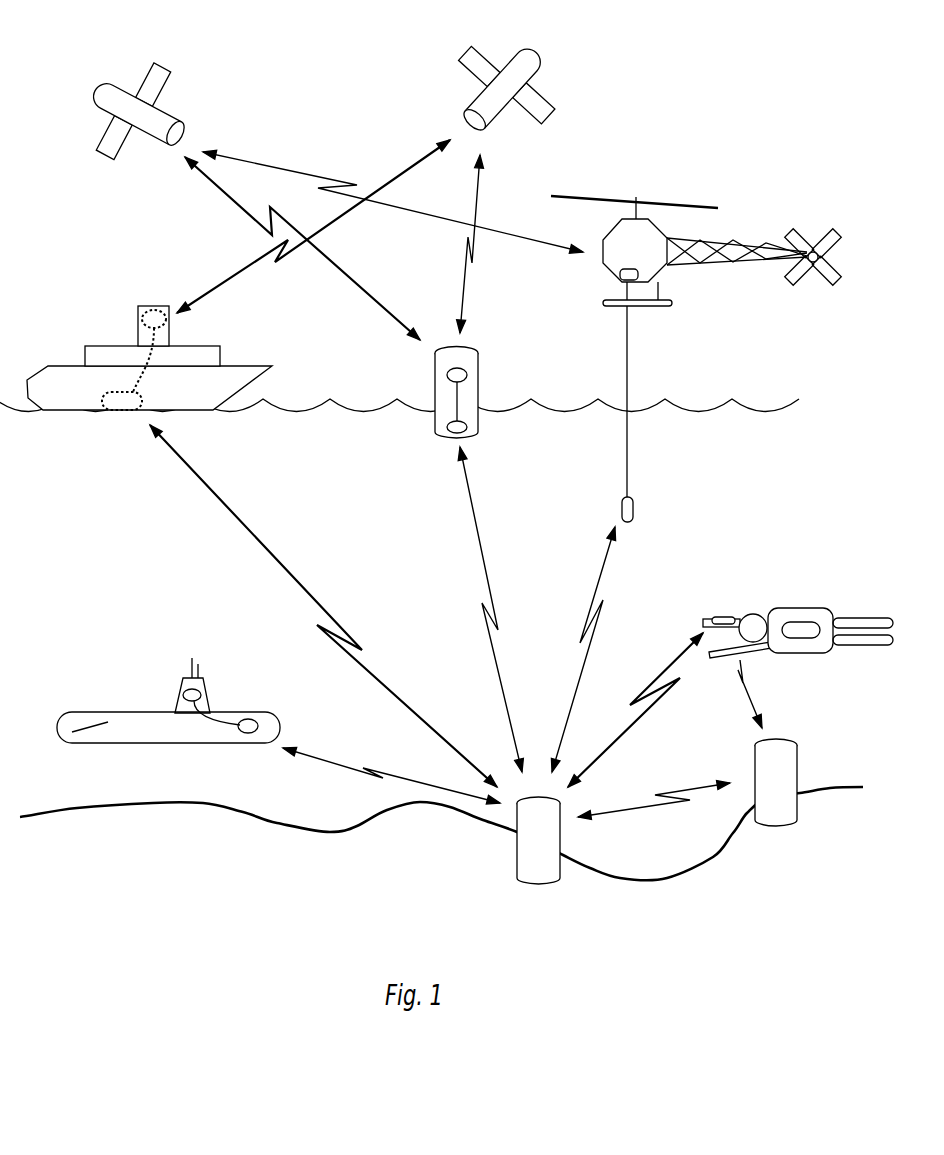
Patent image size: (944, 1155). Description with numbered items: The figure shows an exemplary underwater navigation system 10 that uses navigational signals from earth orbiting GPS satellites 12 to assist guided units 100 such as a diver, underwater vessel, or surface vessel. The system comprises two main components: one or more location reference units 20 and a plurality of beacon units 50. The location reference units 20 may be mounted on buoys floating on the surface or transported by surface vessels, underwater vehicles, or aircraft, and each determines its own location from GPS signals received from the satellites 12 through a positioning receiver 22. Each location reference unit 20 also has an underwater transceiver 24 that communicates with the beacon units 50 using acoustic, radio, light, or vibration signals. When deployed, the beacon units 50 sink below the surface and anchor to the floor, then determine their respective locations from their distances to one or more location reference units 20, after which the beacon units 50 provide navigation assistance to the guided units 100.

The underwater navigation system 10 is at (620, 122).
The GPS satellite 12 is at (123, 92).
The location reference unit 20 is at (115, 339).
The positioning receiver 22 is at (148, 310).
The underwater transceiver 24 is at (123, 410).
The beacon unit 50 is at (533, 882).
The guided unit 100 is at (723, 614).